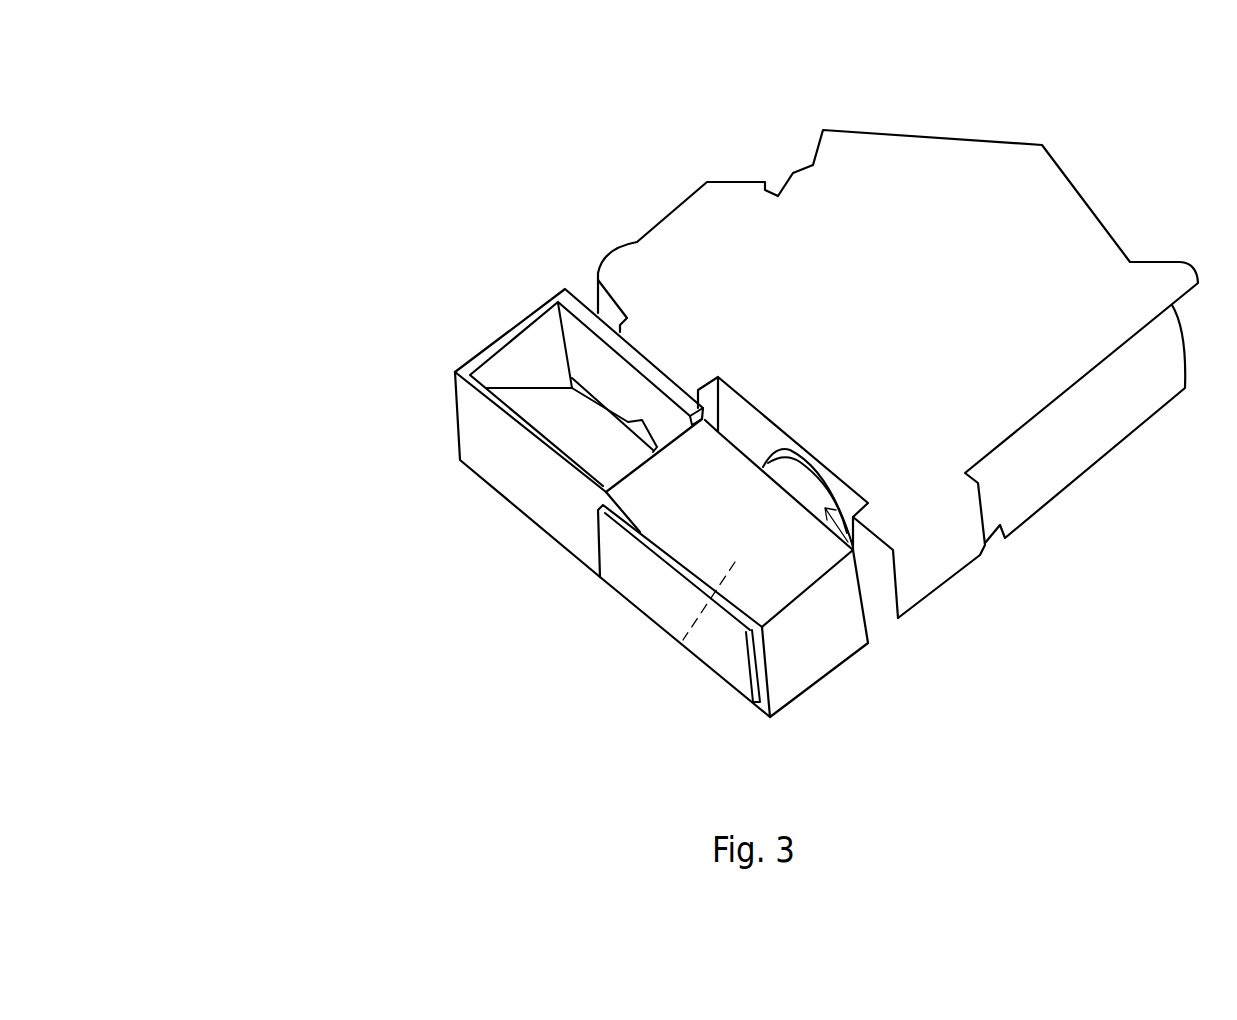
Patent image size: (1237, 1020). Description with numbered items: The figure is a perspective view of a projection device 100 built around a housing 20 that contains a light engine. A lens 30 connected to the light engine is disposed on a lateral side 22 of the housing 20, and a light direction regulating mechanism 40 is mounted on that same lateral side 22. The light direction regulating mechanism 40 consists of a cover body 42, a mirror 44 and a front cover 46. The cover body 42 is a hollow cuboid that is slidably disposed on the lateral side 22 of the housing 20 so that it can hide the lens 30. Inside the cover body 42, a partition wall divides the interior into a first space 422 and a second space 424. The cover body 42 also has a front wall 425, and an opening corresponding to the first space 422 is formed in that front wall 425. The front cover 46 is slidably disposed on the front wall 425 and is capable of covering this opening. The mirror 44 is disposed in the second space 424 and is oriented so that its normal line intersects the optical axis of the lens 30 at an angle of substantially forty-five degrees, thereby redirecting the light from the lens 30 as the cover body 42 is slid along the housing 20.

The projection device 100 is at (257, 90).
The housing 20 is at (900, 242).
The lateral side 22 is at (733, 427).
The lens 30 is at (853, 517).
The light direction regulating mechanism 40 is at (345, 263).
The cover body 42 is at (493, 347).
The mirror 44 is at (558, 422).
The front cover 46 is at (635, 587).
The first space 422 is at (683, 640).
The second space 424 is at (530, 348).
The front wall 425 is at (762, 673).